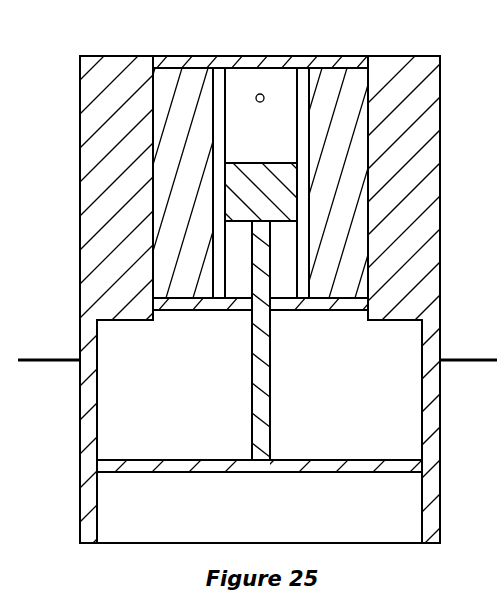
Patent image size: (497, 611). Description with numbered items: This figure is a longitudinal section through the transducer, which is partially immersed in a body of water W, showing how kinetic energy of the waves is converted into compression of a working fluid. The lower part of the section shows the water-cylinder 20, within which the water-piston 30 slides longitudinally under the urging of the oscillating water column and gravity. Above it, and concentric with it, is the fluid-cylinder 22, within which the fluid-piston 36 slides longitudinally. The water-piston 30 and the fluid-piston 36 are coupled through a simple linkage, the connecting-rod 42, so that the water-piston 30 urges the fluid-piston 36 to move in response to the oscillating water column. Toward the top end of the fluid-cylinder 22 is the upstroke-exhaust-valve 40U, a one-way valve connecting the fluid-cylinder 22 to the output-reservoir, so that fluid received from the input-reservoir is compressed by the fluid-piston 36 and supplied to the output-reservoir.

The upstroke-exhaust-valve 40U is at (262, 92).
The fluid-cylinder 22 is at (272, 126).
The fluid-piston 36 is at (283, 163).
The connecting-rod 42 is at (290, 396).
The water-piston 30 is at (168, 460).
The water-cylinder 20 is at (275, 522).
The body of water W is at (67, 356).